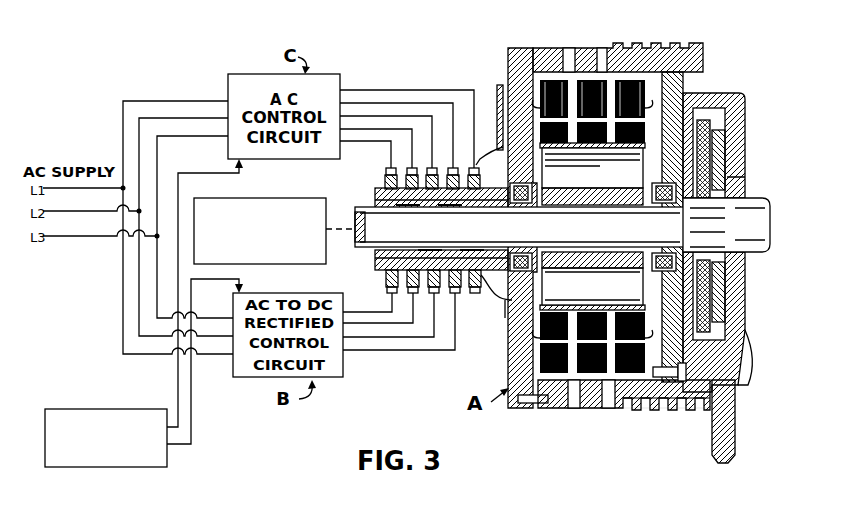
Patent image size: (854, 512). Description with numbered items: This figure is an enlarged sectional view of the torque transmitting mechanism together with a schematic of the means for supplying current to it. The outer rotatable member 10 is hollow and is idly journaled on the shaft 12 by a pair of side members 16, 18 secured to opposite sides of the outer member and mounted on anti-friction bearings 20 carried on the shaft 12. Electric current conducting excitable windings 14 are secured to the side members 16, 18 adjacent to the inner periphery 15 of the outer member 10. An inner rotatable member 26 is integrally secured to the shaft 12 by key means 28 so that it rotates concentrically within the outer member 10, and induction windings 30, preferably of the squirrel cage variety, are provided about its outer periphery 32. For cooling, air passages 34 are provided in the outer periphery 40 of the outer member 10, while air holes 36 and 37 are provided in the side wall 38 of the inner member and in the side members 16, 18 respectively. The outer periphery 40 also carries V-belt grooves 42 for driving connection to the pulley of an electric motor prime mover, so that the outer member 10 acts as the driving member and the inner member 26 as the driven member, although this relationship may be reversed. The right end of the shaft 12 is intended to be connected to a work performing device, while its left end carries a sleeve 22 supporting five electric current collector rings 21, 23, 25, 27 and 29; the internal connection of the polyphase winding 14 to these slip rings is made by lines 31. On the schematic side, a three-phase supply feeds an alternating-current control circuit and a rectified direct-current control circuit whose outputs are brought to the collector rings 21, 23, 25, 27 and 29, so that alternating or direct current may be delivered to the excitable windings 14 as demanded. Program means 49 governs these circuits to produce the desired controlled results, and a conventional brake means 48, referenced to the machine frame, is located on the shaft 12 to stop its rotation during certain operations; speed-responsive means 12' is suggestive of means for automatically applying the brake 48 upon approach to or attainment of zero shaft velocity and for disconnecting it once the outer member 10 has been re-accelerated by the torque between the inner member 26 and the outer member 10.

The outer rotatable member 10 is at (600, 36).
The shaft 12 is at (562, 225).
The speed-responsive means 12' is at (276, 221).
The excitable windings 14 is at (683, 84).
The inner periphery 15 is at (633, 72).
The side member 16 is at (523, 368).
The side member 18 is at (672, 408).
The anti-friction bearings 20 is at (517, 204).
The collector ring 21 is at (384, 177).
The sleeve 22 is at (374, 197).
The collector ring 23 is at (402, 208).
The collector ring 25 is at (431, 214).
The inner rotatable member 26 is at (610, 180).
The collector ring 27 is at (445, 207).
The key means 28 is at (576, 184).
The collector ring 29 is at (468, 212).
The induction windings 30 is at (503, 110).
The lines 31 is at (515, 307).
The outer periphery 32 is at (600, 308).
The air passages 34 is at (605, 50).
The air holes 36 is at (592, 189).
The air holes 37 is at (505, 320).
The side wall 38 is at (592, 266).
The outer periphery 40 is at (542, 48).
The V-belt grooves 42 is at (662, 50).
The brake means 48 is at (714, 425).
The program means 49 is at (113, 409).